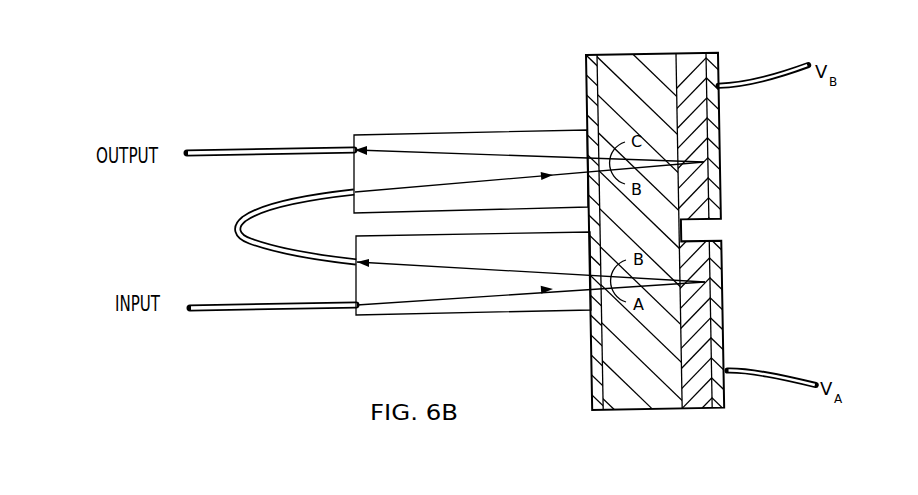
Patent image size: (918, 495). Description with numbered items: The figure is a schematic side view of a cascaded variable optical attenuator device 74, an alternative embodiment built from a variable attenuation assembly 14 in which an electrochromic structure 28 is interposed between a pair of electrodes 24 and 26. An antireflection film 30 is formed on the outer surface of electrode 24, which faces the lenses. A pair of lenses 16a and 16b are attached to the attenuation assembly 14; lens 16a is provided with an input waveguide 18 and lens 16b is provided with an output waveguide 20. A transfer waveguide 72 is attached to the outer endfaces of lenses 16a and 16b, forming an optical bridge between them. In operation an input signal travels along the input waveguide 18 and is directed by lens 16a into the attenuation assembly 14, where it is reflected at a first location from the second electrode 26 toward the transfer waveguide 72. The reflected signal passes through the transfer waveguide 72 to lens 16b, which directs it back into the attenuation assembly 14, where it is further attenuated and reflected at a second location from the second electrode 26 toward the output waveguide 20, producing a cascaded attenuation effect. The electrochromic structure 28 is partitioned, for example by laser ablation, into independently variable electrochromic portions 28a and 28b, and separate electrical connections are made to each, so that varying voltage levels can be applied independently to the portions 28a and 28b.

The cascaded VOA device 74 is at (312, 98).
The output waveguide 20 is at (234, 149).
The input waveguide 18 is at (248, 308).
The transfer waveguide 72 is at (235, 228).
The lens 16b is at (494, 134).
The lens 16a is at (504, 306).
The variable attenuation assembly 14 is at (727, 418).
The antireflection film 30 is at (588, 57).
The electrode 24 is at (632, 56).
The electrochromic structure 28 is at (675, 48).
The electrochromic portion 28b is at (690, 140).
The electrochromic portion 28a is at (697, 330).
The second electrode 26 is at (713, 58).